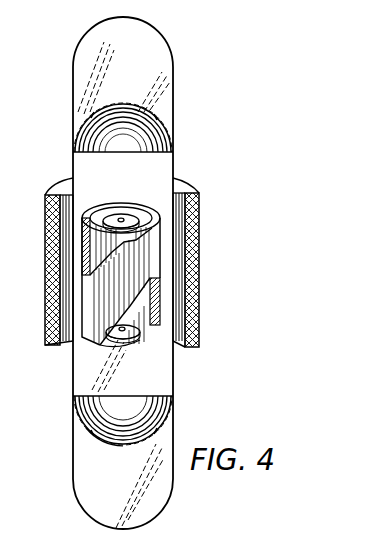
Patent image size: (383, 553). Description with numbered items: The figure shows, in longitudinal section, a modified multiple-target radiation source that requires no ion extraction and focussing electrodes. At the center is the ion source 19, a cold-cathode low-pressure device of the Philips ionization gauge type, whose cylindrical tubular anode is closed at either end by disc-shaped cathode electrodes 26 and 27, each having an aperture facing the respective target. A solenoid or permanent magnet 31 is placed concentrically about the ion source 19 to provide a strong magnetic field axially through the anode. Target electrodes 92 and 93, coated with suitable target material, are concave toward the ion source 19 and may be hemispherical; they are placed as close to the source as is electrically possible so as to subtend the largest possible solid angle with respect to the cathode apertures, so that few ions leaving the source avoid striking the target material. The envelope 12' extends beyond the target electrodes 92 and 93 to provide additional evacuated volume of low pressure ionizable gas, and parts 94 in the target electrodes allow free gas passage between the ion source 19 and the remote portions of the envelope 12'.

The envelope 12' is at (143, 273).
The target electrode 92 is at (93, 131).
The target electrode 93 is at (100, 415).
The parts 94 is at (90, 431).
The solenoid or permanent magnet 31 is at (200, 285).
The ion source 19 is at (130, 296).
The cathode electrode 26 is at (123, 213).
The cathode electrode 27 is at (136, 340).